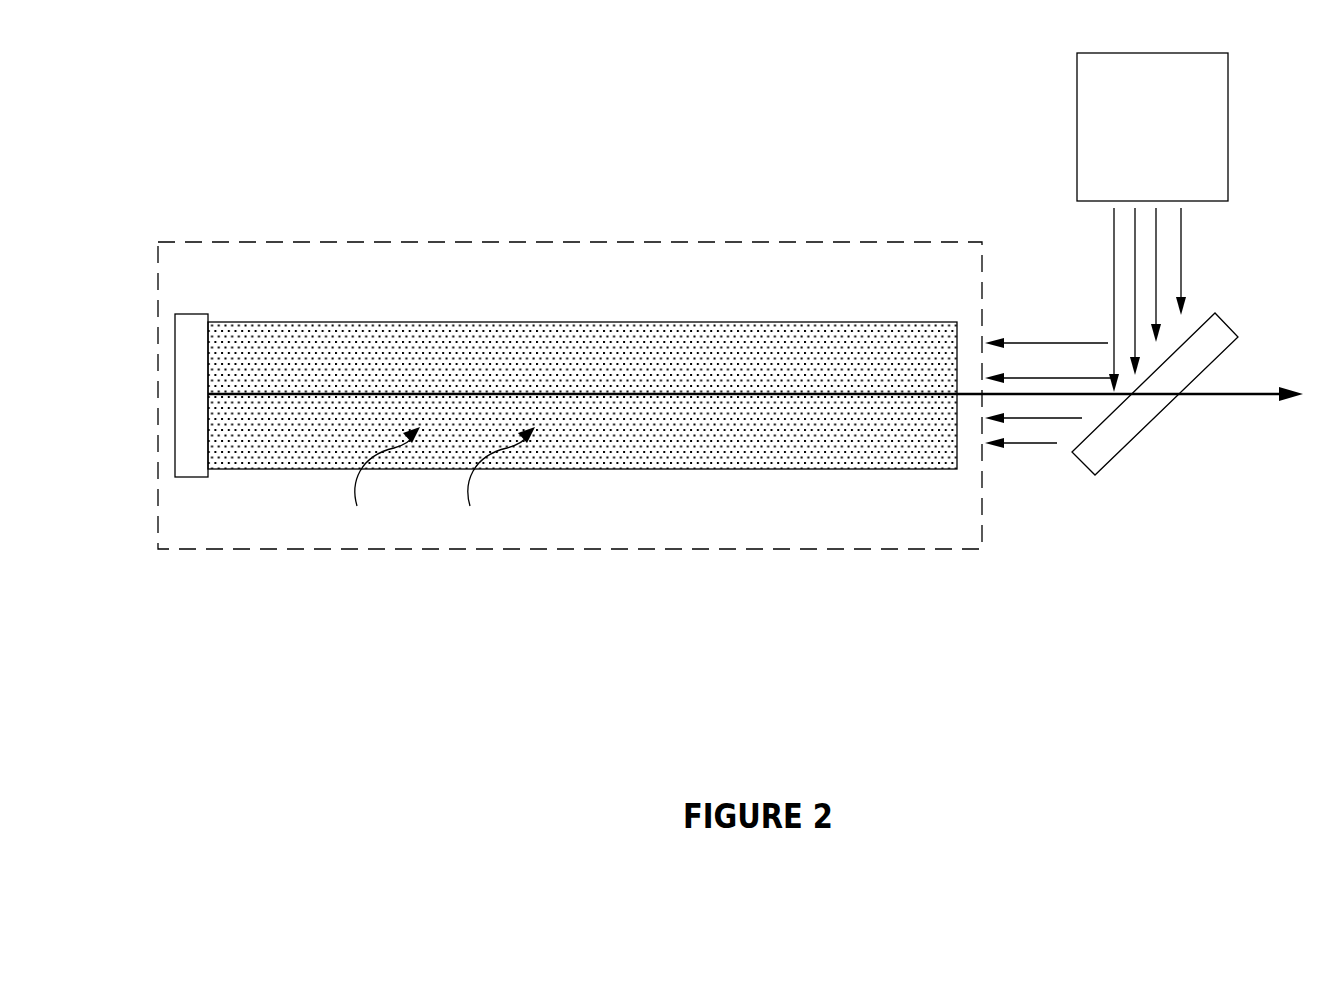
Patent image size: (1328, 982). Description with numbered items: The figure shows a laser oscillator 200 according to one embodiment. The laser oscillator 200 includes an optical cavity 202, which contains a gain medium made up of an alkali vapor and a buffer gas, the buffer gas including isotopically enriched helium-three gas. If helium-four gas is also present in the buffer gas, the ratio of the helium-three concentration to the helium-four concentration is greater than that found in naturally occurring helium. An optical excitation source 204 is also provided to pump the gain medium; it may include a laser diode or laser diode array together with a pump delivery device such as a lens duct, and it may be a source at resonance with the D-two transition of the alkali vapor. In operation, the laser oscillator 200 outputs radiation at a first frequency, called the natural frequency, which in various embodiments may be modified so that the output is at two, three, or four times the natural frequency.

The laser oscillator 200 is at (410, 158).
The optical cavity 202 is at (657, 241).
The optical excitation source 204 is at (1228, 107).